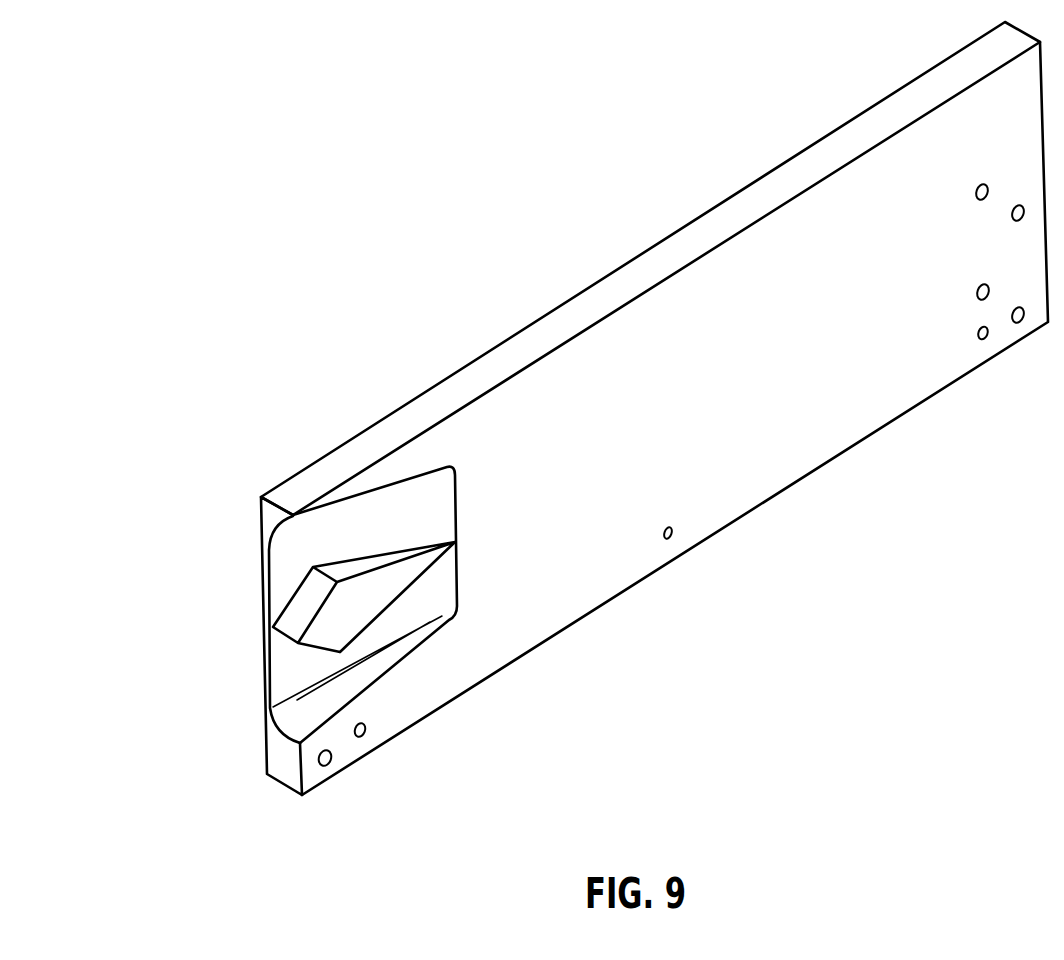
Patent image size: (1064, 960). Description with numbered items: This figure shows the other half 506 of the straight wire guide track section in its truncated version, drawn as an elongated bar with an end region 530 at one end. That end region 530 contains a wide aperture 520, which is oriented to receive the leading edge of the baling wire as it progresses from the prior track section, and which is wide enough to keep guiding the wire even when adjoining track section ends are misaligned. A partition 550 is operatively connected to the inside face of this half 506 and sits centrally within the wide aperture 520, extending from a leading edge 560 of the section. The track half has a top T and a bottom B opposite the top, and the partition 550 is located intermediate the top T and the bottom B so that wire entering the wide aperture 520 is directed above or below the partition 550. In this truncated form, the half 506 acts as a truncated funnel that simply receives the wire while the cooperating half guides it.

The other half of the straight wire guide track 506 is at (690, 663).
The wide aperture 520 is at (283, 556).
The end portion of bar 530 is at (443, 360).
The partition 550 is at (348, 607).
The leading edge 560 is at (272, 660).
The top T is at (560, 325).
The bottom B is at (771, 526).